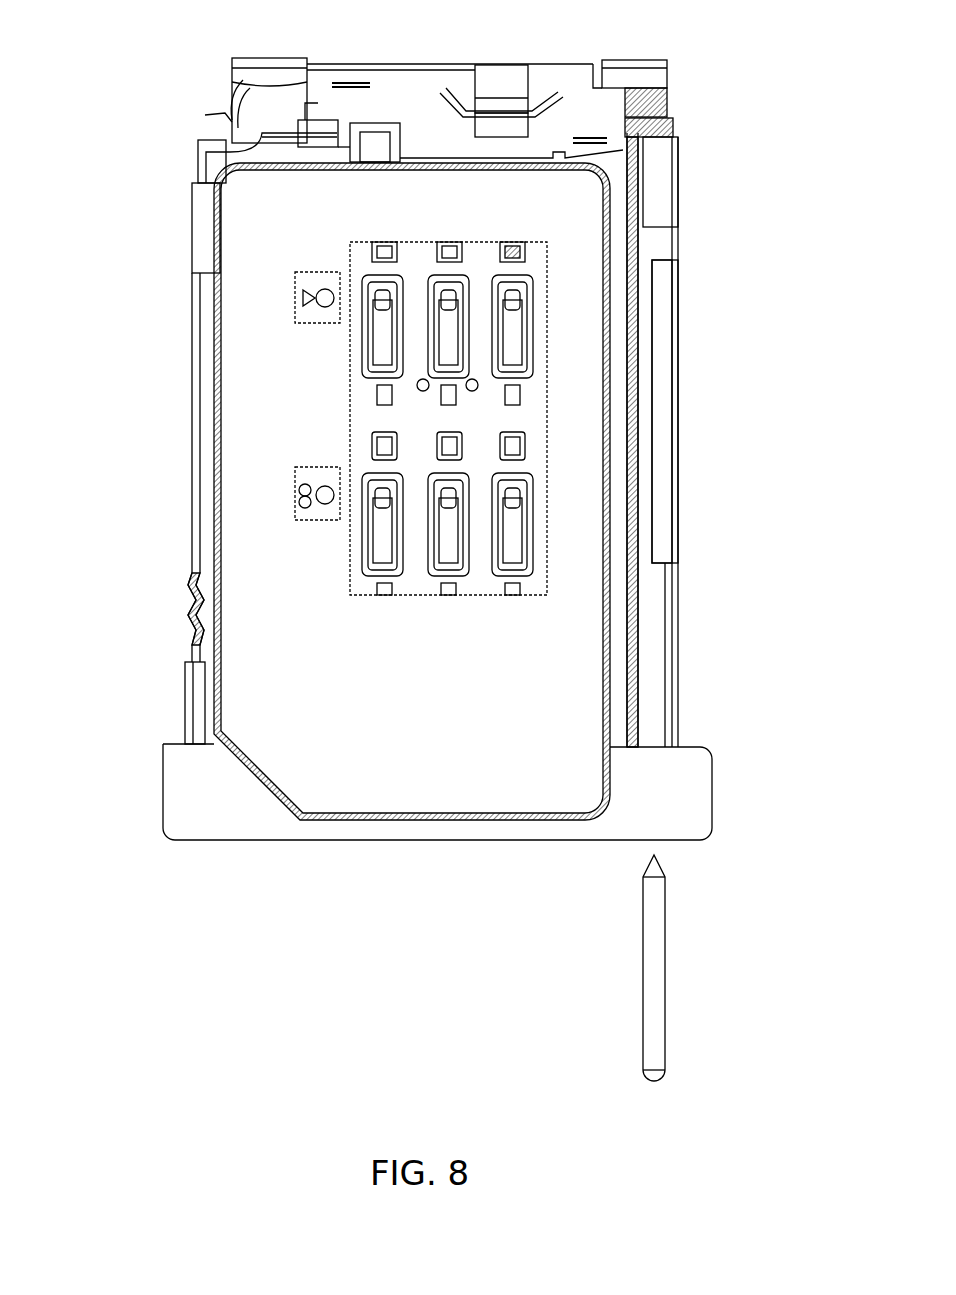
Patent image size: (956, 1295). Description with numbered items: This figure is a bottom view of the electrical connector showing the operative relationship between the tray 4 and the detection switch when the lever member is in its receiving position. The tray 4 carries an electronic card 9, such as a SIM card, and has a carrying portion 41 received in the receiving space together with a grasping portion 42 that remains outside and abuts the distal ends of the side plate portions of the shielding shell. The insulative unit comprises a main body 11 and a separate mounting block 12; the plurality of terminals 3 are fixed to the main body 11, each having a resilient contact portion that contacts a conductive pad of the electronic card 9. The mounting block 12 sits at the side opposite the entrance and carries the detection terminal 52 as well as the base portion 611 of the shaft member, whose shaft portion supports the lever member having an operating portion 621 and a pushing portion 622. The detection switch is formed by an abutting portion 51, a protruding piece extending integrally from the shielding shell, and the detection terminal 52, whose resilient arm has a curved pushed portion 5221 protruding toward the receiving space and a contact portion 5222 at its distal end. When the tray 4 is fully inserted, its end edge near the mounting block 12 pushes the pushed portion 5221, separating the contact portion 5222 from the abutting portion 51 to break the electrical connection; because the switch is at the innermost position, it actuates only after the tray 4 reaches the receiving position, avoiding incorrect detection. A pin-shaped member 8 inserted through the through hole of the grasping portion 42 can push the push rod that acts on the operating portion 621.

The terminals 3 is at (517, 337).
The tray 4 is at (210, 346).
The pin-shaped member 8 is at (657, 969).
The electronic card 9 is at (438, 795).
The main body 11 is at (530, 408).
The mounting block 12 is at (419, 77).
The carrying portion 41 is at (618, 510).
The grasping portion 42 is at (681, 770).
The abutting portion 51 is at (203, 128).
The detection terminal 52 is at (281, 145).
The base portion 611 is at (553, 90).
The operating portion 621 is at (647, 115).
The pushing portion 622 is at (307, 118).
The pushed portion 5221 is at (236, 116).
The contact portion 5222 is at (218, 113).